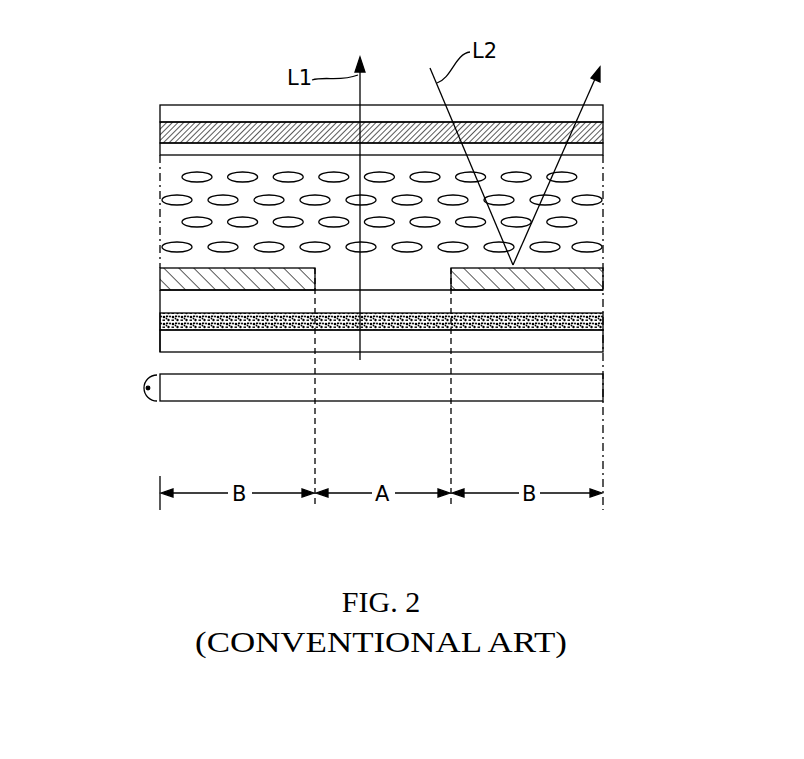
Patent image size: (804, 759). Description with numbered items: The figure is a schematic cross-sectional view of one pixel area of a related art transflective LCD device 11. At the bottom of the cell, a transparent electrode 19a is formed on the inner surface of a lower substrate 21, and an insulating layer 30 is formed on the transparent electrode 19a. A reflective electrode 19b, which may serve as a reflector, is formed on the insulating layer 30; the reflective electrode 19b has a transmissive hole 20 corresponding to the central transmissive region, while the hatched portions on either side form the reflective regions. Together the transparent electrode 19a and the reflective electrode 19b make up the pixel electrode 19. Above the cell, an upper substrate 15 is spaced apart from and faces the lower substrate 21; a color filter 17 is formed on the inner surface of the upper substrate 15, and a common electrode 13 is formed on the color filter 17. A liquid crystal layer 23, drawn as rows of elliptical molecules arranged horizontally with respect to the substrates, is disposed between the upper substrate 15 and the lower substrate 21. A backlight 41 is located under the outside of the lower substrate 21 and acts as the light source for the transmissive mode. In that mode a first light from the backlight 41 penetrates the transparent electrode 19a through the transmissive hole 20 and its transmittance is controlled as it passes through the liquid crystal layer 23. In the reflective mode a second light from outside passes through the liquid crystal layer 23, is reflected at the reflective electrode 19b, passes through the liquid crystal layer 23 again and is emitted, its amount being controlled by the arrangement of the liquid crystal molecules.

The related art transflective LCD device 11 is at (382, 295).
The common electrode 13 is at (601, 150).
The upper substrate 15 is at (601, 107).
The color filter 17 is at (601, 128).
The pixel electrode 19 is at (444, 298).
The transparent electrode 19a is at (601, 318).
The reflective electrode 19b is at (601, 279).
The transmissive hole 20 is at (389, 289).
The lower substrate 21 is at (601, 342).
The liquid crystal layer 23 is at (598, 222).
The insulating layer 30 is at (168, 302).
The backlight 41 is at (601, 389).